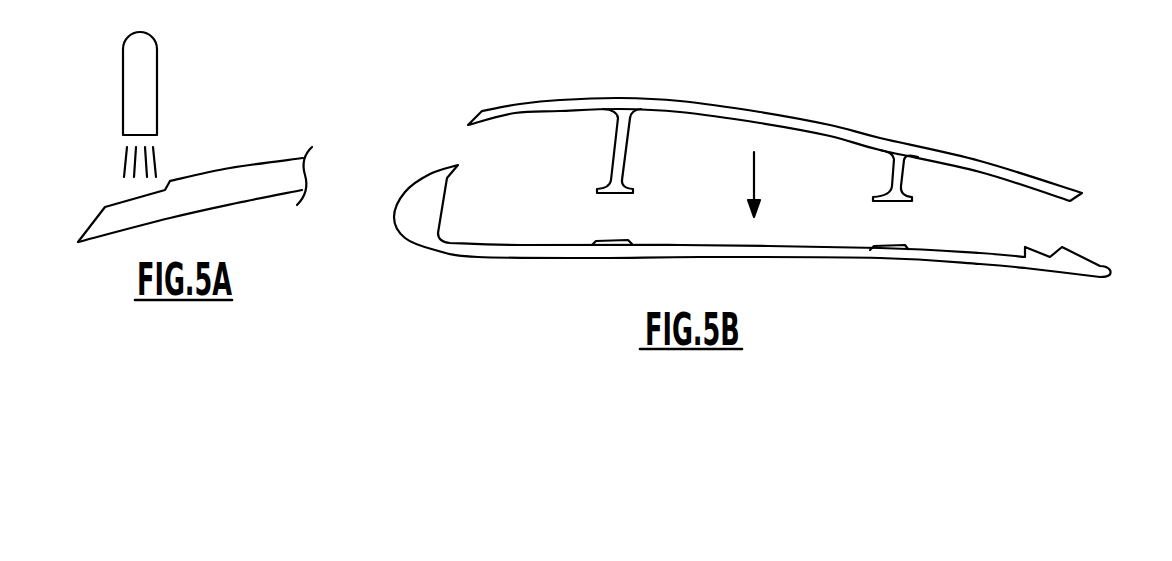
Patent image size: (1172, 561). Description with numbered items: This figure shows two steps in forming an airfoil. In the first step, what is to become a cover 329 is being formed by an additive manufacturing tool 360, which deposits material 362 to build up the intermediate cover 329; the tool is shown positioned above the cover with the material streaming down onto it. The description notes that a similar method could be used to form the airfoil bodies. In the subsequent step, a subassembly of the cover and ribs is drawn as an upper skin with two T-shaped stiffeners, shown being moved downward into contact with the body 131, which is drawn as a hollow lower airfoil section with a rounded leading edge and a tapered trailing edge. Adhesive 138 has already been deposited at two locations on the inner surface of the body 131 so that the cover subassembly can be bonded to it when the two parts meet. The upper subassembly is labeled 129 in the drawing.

In FIG. 5A, the additive manufacturing tool 360 is at (147, 94).
In FIG. 5A, the material 362 is at (125, 158).
In FIG. 5A, the cover 329 is at (250, 172).
In FIG. 5B, the upper skin panel with stringers 129 is at (777, 118).
In FIG. 5B, the body 131 is at (547, 250).
In FIG. 5B, the adhesive 138 is at (600, 240).